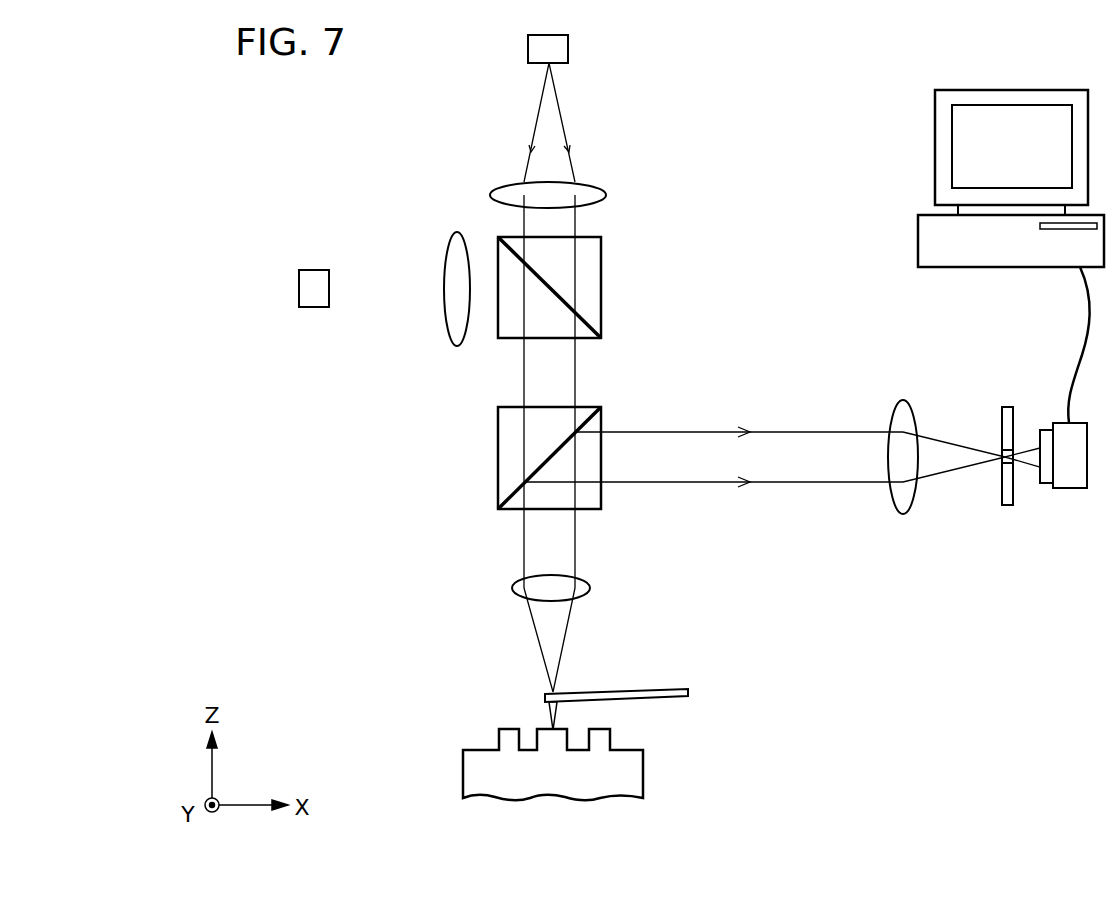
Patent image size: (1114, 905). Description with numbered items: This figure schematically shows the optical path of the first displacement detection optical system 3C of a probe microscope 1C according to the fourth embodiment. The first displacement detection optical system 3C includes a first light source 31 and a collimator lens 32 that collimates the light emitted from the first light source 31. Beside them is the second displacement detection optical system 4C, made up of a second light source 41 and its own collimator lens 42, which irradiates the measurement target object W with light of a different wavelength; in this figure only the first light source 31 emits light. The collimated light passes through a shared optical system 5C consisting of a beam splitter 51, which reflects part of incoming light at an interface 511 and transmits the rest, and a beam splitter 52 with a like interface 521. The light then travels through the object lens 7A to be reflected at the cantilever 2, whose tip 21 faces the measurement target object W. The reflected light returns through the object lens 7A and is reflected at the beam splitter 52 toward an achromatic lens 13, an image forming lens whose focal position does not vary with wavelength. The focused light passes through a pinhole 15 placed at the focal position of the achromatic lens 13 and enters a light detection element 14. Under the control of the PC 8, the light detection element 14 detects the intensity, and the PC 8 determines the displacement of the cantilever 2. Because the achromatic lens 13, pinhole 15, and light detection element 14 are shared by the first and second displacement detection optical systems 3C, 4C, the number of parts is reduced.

The probe microscope 1C is at (822, 100).
The cantilever 2 is at (635, 690).
The probe 21 is at (548, 705).
The measurement target object W is at (632, 773).
The first displacement detection optical system 3C is at (583, 121).
The first light source 31 is at (563, 48).
The collimator lens 32 is at (562, 165).
The second displacement detection optical system 4C is at (384, 237).
The second light source 41 is at (315, 272).
The collimator lens 42 is at (455, 238).
The shared optical system 5C is at (558, 352).
The beam splitter 51 is at (551, 266).
The interface 511 is at (513, 243).
The beam splitter 52 is at (537, 425).
The interface 521 is at (517, 490).
The object lens 7A is at (590, 590).
The achromatic lens 13 is at (905, 505).
The pinhole 15 is at (1007, 505).
The light detection element 14 is at (1063, 503).
The PC 8 is at (963, 262).